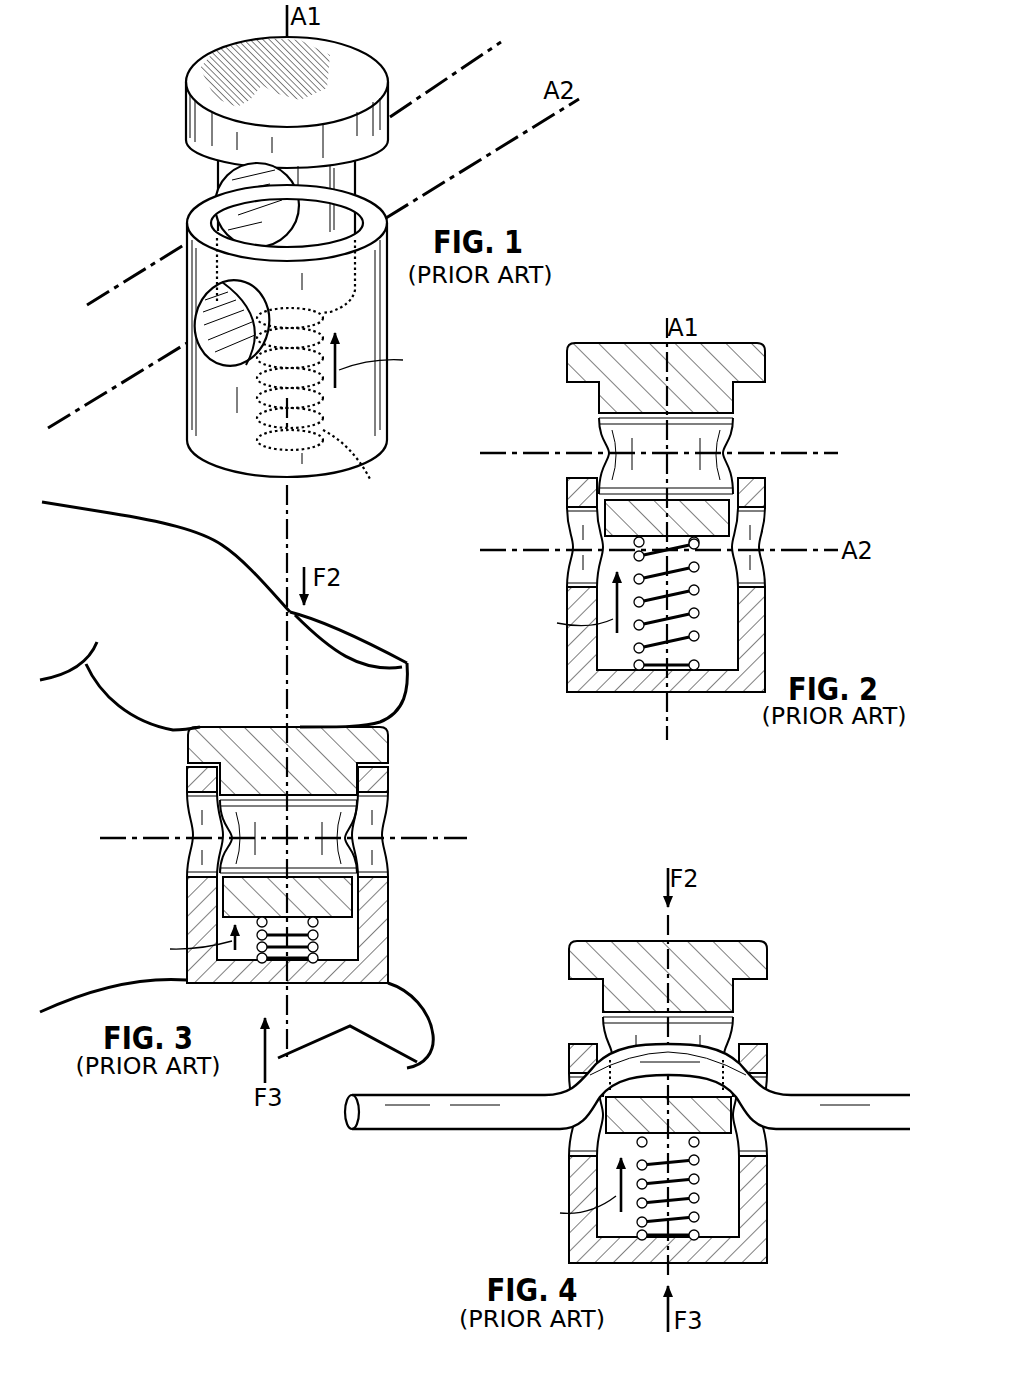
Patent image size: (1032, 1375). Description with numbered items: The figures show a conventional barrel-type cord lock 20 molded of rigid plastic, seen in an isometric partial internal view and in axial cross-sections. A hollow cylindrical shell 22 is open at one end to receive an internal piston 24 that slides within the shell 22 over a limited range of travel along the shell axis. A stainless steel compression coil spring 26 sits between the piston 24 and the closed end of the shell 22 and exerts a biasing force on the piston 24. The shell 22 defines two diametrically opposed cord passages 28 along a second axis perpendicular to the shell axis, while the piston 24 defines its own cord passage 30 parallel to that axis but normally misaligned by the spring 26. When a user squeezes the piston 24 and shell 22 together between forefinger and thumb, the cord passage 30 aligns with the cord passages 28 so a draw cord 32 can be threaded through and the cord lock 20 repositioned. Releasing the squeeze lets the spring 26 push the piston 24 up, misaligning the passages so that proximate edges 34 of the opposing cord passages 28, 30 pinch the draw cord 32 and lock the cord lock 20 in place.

In FIG. 1, the cord lock 20 is at (132, 252).
In FIG. 2, the cord lock 20 is at (513, 508).
In FIG. 3, the cord lock 20 is at (127, 760).
In FIG. 4, the cord lock 20 is at (549, 1016).
In FIG. 1, the shell 22 is at (259, 333).
In FIG. 2, the shell 22 is at (670, 585).
In FIG. 3, the shell 22 is at (284, 875).
In FIG. 4, the shell 22 is at (676, 1153).
In FIG. 1, the piston 24 is at (286, 142).
In FIG. 2, the piston 24 is at (668, 439).
In FIG. 3, the piston 24 is at (290, 813).
In FIG. 4, the piston 24 is at (680, 1037).
In FIG. 1, the compression coil spring 26 is at (301, 370).
In FIG. 2, the compression coil spring 26 is at (697, 628).
In FIG. 3, the compression coil spring 26 is at (320, 944).
In FIG. 4, the compression coil spring 26 is at (668, 1188).
In FIG. 1, the cord passages 28 is at (207, 322).
In FIG. 2, the cord passages 28 is at (583, 560).
In FIG. 3, the cord passages 28 is at (200, 823).
In FIG. 4, the cord passages 28 is at (592, 1124).
In FIG. 1, the cord passage 30 is at (240, 206).
In FIG. 2, the cord passage 30 is at (627, 445).
In FIG. 3, the cord passage 30 is at (267, 850).
In FIG. 4, the cord passage 30 is at (695, 1041).
In FIG. 4, the draw cord 32 is at (627, 1122).
In FIG. 4, the proximate edges 34 is at (583, 1100).